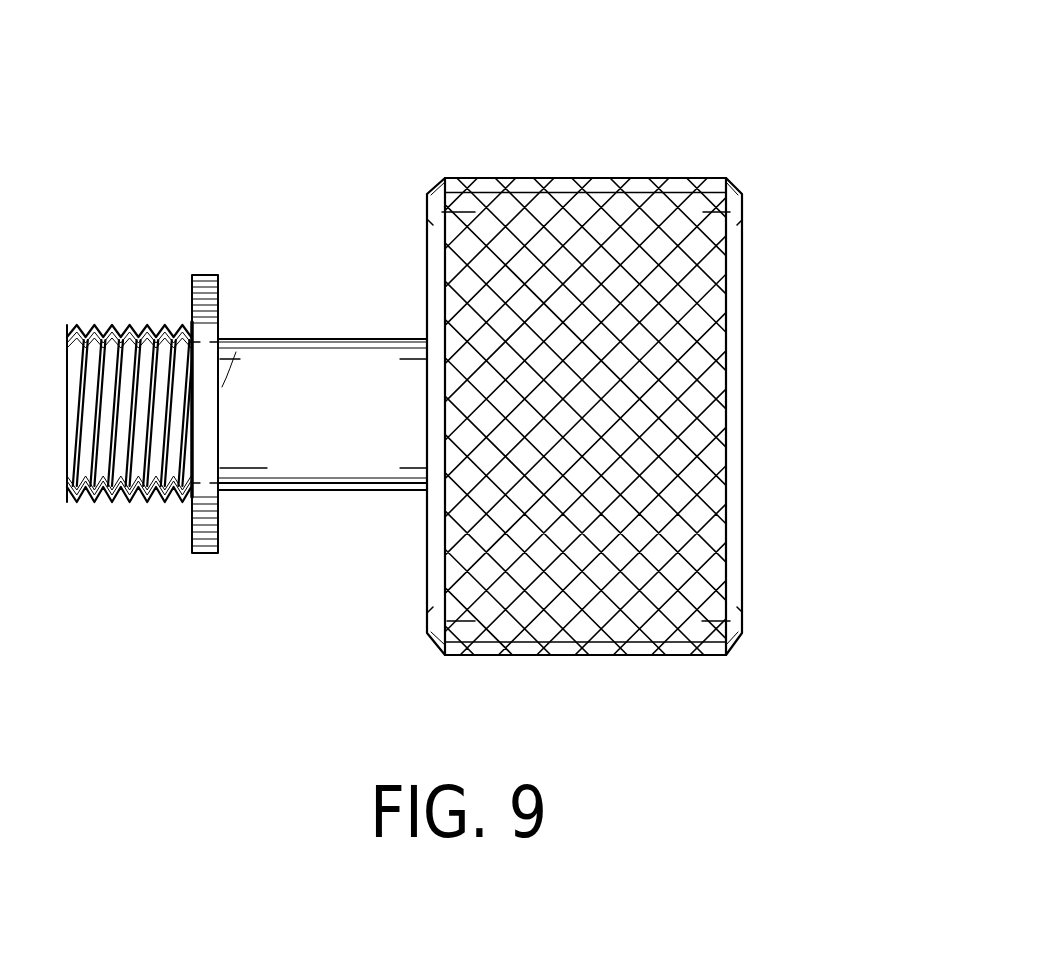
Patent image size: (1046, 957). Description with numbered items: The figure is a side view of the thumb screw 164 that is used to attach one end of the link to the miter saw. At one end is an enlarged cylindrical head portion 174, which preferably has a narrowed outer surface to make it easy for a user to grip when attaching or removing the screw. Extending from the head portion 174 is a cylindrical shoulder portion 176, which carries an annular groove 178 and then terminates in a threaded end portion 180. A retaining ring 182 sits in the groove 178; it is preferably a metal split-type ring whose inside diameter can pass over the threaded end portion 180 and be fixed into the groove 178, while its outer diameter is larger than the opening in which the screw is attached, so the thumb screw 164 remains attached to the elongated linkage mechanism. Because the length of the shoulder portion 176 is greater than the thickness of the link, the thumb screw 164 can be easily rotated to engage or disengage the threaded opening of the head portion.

The thumb screw 164 is at (466, 361).
The head portion 174 is at (736, 445).
The shoulder portion 176 is at (312, 462).
The annular groove 178 is at (222, 387).
The threaded end portion 180 is at (127, 503).
The retaining ring 182 is at (202, 542).